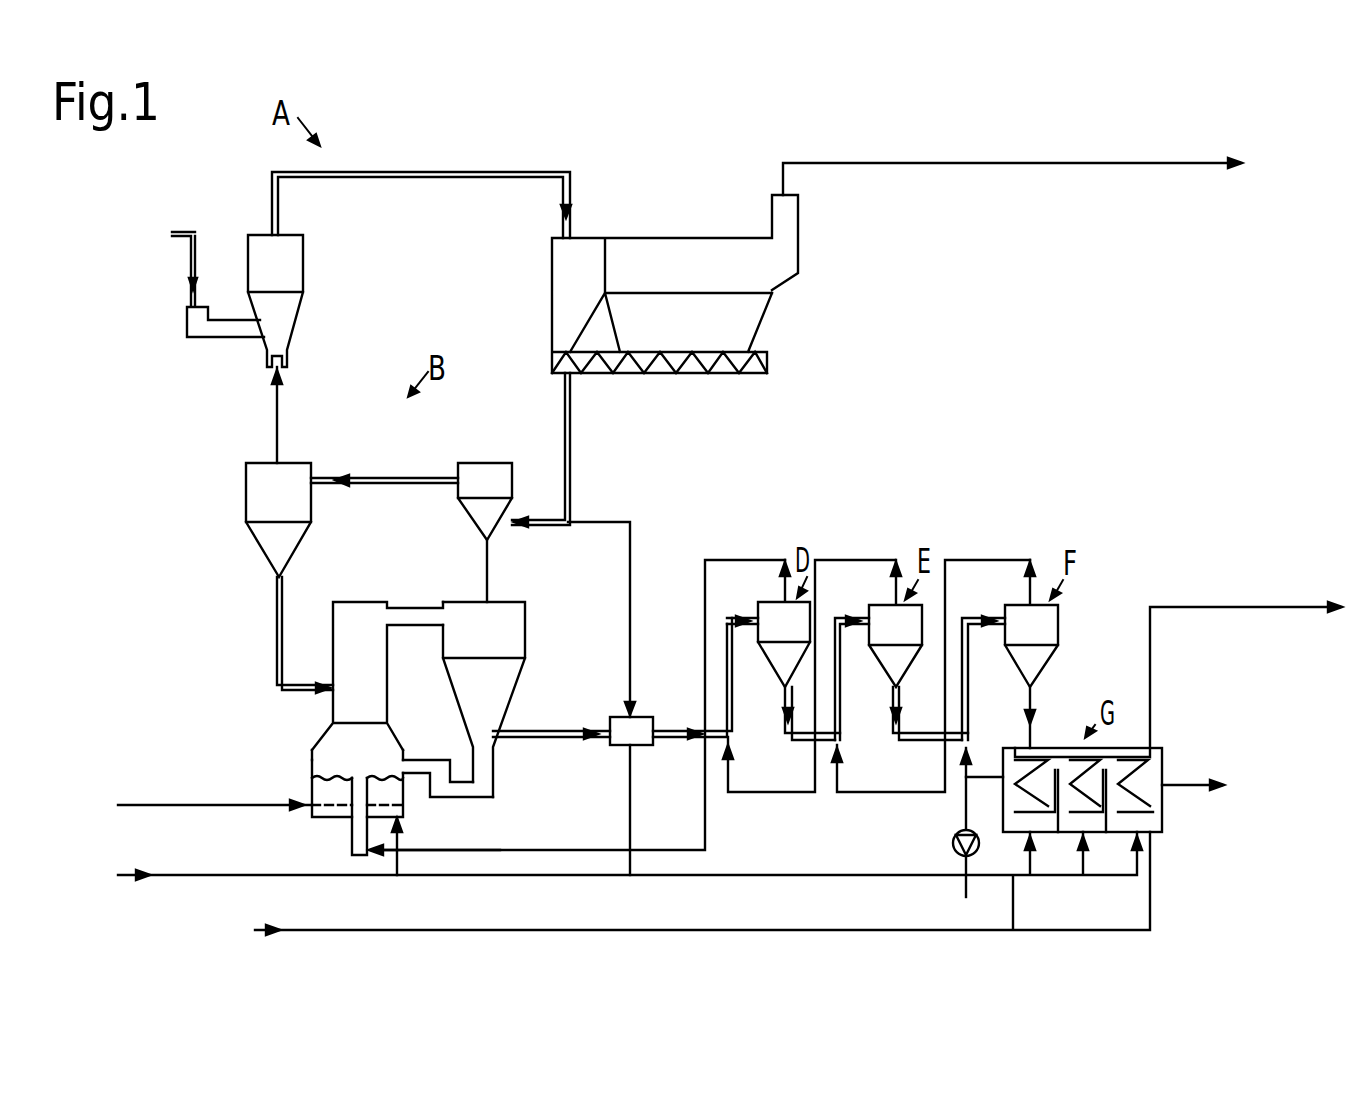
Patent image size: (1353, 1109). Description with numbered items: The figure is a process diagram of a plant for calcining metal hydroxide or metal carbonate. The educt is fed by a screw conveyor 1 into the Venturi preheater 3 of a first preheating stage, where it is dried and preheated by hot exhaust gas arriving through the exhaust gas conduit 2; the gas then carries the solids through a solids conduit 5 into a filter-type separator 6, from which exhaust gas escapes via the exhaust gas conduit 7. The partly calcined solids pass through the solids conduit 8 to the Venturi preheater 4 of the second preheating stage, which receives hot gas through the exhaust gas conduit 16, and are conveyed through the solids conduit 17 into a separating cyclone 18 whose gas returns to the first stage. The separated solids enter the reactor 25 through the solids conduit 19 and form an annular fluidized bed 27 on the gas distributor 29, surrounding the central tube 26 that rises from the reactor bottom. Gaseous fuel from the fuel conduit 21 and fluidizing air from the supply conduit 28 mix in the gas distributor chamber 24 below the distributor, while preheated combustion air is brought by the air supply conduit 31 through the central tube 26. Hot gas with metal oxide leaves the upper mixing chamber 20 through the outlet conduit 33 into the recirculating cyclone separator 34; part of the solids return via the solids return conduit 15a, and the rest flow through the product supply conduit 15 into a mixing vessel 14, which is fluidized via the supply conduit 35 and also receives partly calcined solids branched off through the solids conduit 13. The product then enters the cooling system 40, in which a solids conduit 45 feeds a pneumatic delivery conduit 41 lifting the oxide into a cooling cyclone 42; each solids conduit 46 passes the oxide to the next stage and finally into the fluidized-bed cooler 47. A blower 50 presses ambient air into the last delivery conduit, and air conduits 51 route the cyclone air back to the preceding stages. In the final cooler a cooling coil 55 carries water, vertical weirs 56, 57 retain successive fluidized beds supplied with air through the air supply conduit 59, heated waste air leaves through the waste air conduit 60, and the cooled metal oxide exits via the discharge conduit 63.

The screw conveyor 1 is at (217, 340).
The exhaust gas conduit 2 is at (278, 418).
The Venturi preheater 3 is at (302, 320).
The Venturi preheater 4 is at (485, 460).
The solids conduit 5 is at (418, 170).
The separator 6 is at (680, 236).
The exhaust gas conduit 7 is at (910, 162).
The solids conduit 8 is at (573, 456).
The solids conduit 13 is at (635, 543).
The mixing vessel 14 is at (643, 713).
The product supply conduit 15 is at (545, 728).
The solids return conduit 15a is at (476, 795).
The exhaust gas conduit 16 is at (510, 563).
The solids conduit 17 is at (357, 477).
The separating cyclone 18 is at (243, 497).
The solids conduit 19 is at (275, 625).
The mixing chamber 20 is at (327, 765).
The fuel conduit 21 is at (197, 860).
The gas distributor chamber 24 is at (317, 812).
The reactor 25 is at (308, 750).
The central tube 26 is at (348, 835).
The annular fluidized bed 27 is at (322, 795).
The supply conduit 28 is at (434, 885).
The gas distributor 29 is at (419, 822).
The air supply conduit 31 is at (707, 808).
The outlet conduit 33 is at (398, 602).
The separator 34 is at (527, 627).
The supply conduit 35 is at (633, 810).
The cooling system 40 is at (919, 575).
The pneumatic delivery conduit 41 is at (731, 693).
The cooling cyclone 42 is at (772, 615).
The solids conduit 45 is at (683, 725).
The solids conduit 46 is at (1053, 678).
The fluidized-bed cooler 47 is at (1172, 764).
The blower 50 is at (952, 840).
The air conduit 51 is at (850, 560).
The cooling coil 55 is at (1147, 800).
The vertical weir 56 is at (1063, 825).
The vertical weir 57 is at (1112, 822).
The air supply conduit 59 is at (634, 909).
The waste air conduit 60 is at (985, 775).
The discharge conduit 63 is at (1220, 778).